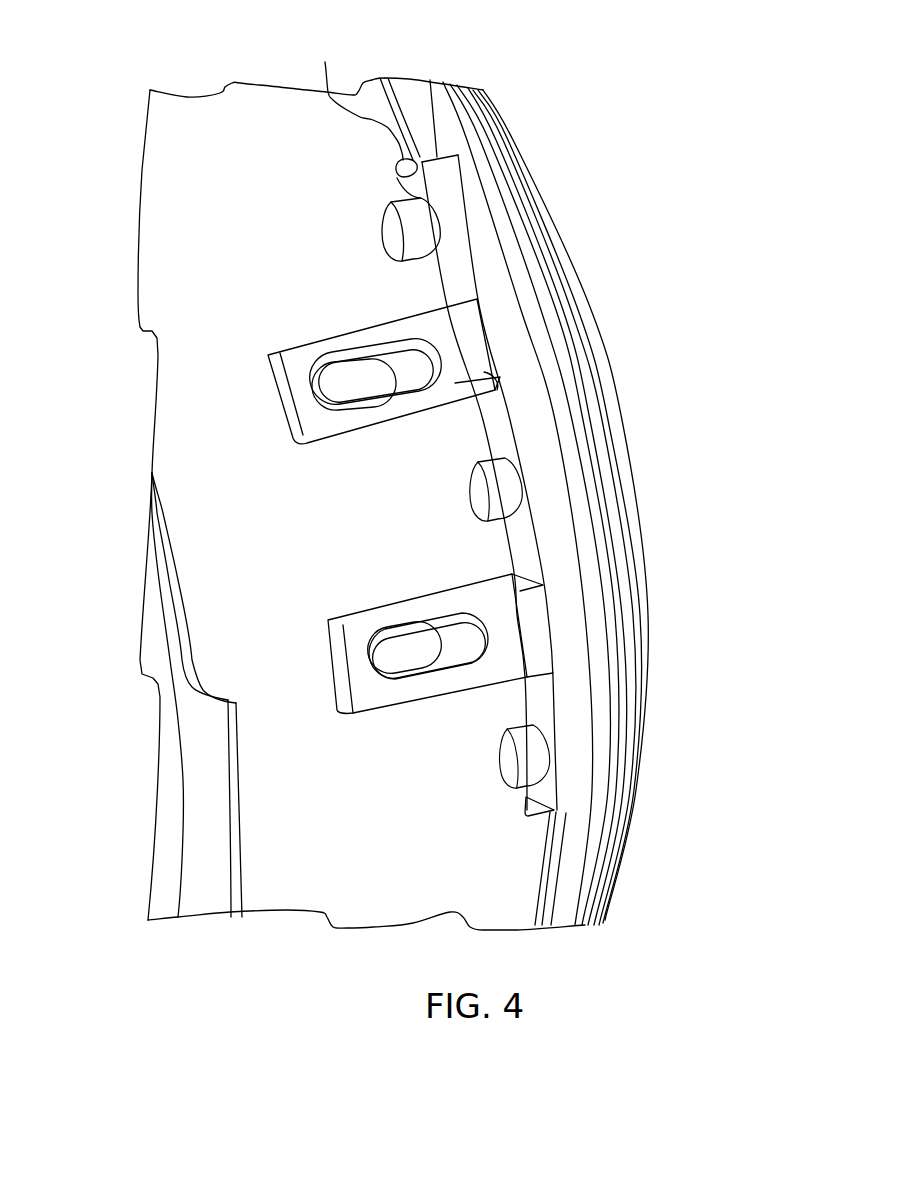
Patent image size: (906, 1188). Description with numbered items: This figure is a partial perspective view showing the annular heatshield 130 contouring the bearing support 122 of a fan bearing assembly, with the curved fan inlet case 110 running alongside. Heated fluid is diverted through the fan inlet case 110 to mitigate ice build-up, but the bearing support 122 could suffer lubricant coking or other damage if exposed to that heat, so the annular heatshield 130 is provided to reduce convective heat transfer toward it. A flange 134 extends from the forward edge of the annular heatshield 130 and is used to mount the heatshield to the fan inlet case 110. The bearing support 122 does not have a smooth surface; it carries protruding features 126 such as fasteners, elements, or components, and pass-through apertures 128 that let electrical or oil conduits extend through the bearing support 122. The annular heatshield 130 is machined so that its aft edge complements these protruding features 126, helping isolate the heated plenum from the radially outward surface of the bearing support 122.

The fan inlet case 110 is at (562, 500).
The bearing support 122 is at (567, 587).
The protruding features 126 is at (418, 228).
The pass-through apertures 128 is at (413, 633).
The annular heatshield 130 is at (160, 195).
The flange 134 is at (220, 893).